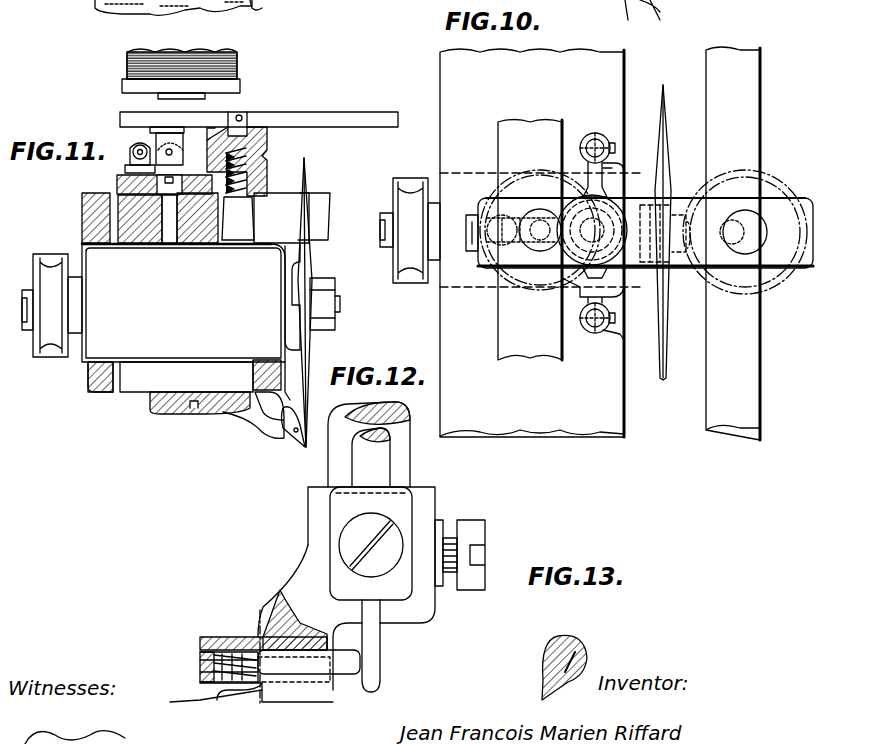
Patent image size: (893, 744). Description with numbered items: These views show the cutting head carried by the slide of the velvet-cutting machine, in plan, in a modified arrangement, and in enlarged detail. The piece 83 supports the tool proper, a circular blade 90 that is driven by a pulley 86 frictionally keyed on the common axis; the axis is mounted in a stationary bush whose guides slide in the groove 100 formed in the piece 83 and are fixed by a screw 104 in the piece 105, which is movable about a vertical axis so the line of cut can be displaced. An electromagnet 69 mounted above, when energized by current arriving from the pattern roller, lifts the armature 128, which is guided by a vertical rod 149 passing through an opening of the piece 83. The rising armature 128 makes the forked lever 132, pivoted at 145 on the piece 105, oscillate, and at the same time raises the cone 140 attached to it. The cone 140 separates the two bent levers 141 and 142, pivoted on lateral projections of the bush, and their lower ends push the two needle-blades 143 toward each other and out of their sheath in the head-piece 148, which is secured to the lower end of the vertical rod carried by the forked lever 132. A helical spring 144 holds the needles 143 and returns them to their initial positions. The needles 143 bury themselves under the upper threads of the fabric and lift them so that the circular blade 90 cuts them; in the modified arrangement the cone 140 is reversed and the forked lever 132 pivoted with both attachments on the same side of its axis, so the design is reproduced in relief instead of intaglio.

In FIG. 11, the electromagnet 69 is at (239, 63).
In FIG. 10, the electromagnet 69 is at (543, 173).
In FIG. 11, the piece 83 is at (263, 360).
In FIG. 10, the piece 83 is at (600, 243).
In FIG. 11, the pulley 86 is at (51, 330).
In FIG. 10, the pulley 86 is at (412, 253).
In FIG. 11, the circular blade 90 is at (306, 262).
In FIG. 10, the circular blade 90 is at (667, 315).
In FIG. 11, the groove 100 is at (260, 218).
In FIG. 10, the groove 100 is at (470, 237).
In FIG. 11, the screw 104 is at (170, 222).
In FIG. 10, the piece 105 is at (597, 10).
In FIG. 11, the armature 128 is at (351, 104).
In FIG. 10, the armature 128 is at (803, 270).
In FIG. 11, the forked lever 132 is at (192, 153).
In FIG. 10, the forked lever 132 is at (605, 193).
In FIG. 11, the cone 140 is at (250, 213).
In FIG. 11, the bent lever 141 is at (250, 8).
In FIG. 11, the bent lever 142 is at (284, 397).
In FIG. 12, the bent lever 142 is at (380, 672).
In FIG. 11, the needle-blade 143 is at (301, 446).
In FIG. 10, the needle-blade 143 is at (660, 8).
In FIG. 12, the needle-blade 143 is at (316, 692).
In FIG. 13, the needle-blade 143 is at (545, 690).
In FIG. 12, the helical spring 144 is at (220, 688).
In FIG. 11, the pivot 145 is at (133, 152).
In FIG. 10, the pivot 145 is at (525, 240).
In FIG. 11, the head-piece 148 is at (258, 416).
In FIG. 10, the head-piece 148 is at (628, 8).
In FIG. 12, the head-piece 148 is at (318, 560).
In FIG. 13, the head-piece 148 is at (585, 654).
In FIG. 10, the vertical rod 149 is at (745, 232).